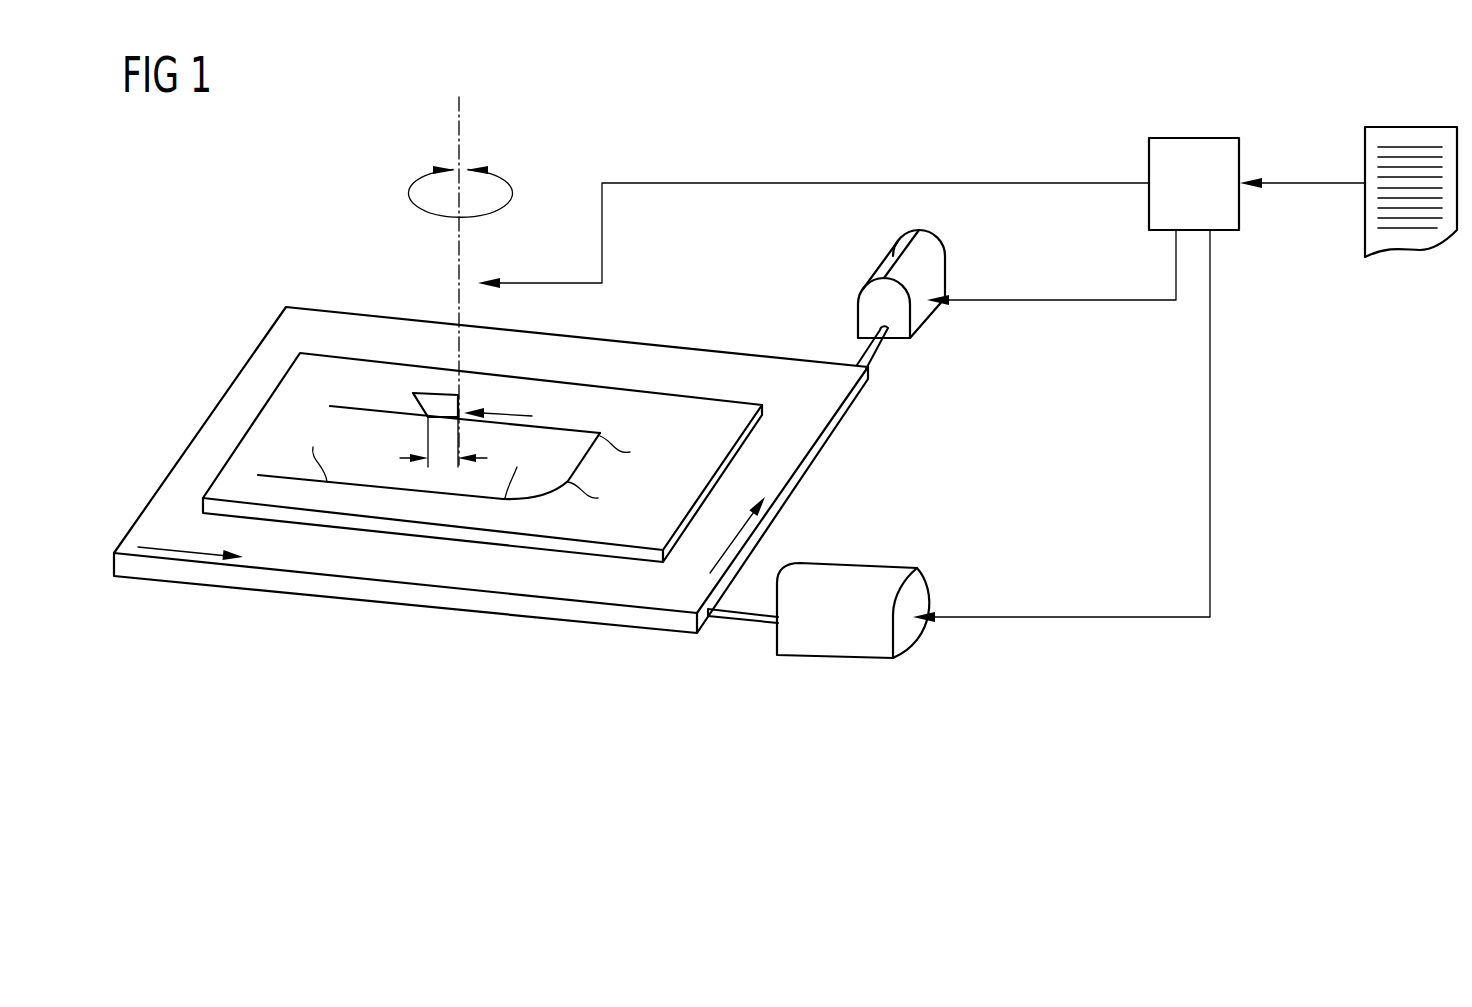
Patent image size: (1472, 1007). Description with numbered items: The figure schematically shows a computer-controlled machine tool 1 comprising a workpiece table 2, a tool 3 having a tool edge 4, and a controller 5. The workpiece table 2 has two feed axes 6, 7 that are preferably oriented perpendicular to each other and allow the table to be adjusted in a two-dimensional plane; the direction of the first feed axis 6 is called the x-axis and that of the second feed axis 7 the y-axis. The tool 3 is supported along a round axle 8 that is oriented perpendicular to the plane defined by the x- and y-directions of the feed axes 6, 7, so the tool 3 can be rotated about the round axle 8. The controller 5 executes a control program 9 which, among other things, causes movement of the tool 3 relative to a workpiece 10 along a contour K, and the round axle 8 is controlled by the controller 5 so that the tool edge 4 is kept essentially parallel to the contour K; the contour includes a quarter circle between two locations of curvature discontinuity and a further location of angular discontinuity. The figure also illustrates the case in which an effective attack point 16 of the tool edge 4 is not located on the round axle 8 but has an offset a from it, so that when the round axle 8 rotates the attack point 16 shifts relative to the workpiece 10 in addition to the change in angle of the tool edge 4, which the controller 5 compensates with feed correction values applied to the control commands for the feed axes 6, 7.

The machine tool 1 is at (369, 192).
The workpiece table 2 is at (678, 352).
The tool 3 is at (417, 394).
The tool edge 4 is at (425, 408).
The controller 5 is at (1195, 138).
The first feed axis 6 is at (867, 562).
The second feed axis 7 is at (880, 256).
The round axle 8 is at (458, 243).
The control program 9 is at (1405, 127).
The workpiece 10 is at (750, 397).
The effective attack point 16 is at (425, 425).